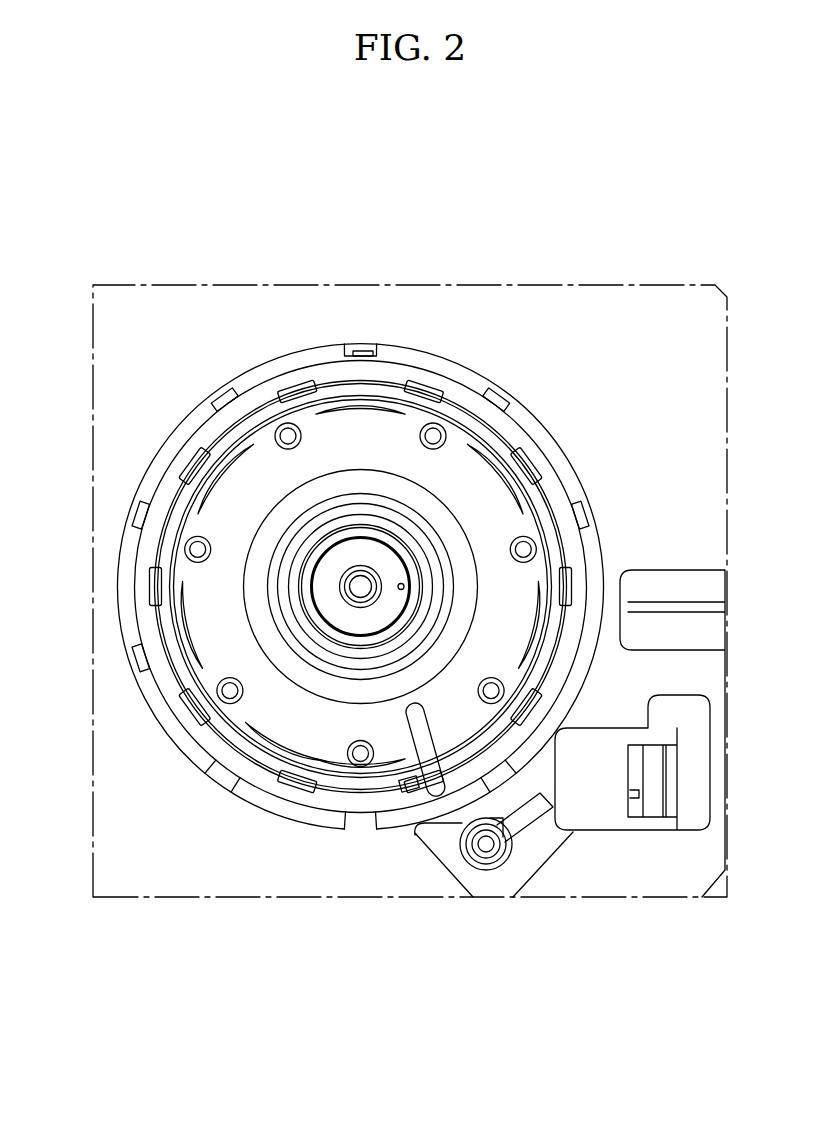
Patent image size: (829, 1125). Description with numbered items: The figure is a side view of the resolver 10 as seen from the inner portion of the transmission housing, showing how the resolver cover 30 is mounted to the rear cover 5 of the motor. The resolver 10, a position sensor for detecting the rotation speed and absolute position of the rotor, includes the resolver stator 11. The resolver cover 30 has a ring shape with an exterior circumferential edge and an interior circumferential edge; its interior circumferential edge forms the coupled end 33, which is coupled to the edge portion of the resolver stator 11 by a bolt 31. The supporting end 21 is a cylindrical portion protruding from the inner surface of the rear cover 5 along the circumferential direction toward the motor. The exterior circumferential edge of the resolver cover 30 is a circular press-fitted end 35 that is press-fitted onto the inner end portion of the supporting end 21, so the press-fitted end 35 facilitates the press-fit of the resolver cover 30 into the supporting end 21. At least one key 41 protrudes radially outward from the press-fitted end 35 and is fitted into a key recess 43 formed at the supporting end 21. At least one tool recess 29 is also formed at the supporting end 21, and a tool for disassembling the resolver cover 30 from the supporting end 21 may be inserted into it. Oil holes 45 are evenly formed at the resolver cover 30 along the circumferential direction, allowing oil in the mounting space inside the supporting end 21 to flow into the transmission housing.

The rear cover 5 is at (530, 330).
The resolver 10 is at (283, 743).
The resolver stator 11 is at (207, 577).
The supporting end 21 is at (565, 443).
The tool recess 29 is at (242, 402).
The resolver cover 30 is at (587, 542).
The bolt 31 is at (184, 543).
The coupled end 33 is at (227, 465).
The press-fitted end 35 is at (395, 372).
The key 41 is at (368, 352).
The key recess 43 is at (350, 354).
The oil hole 45 is at (191, 463).